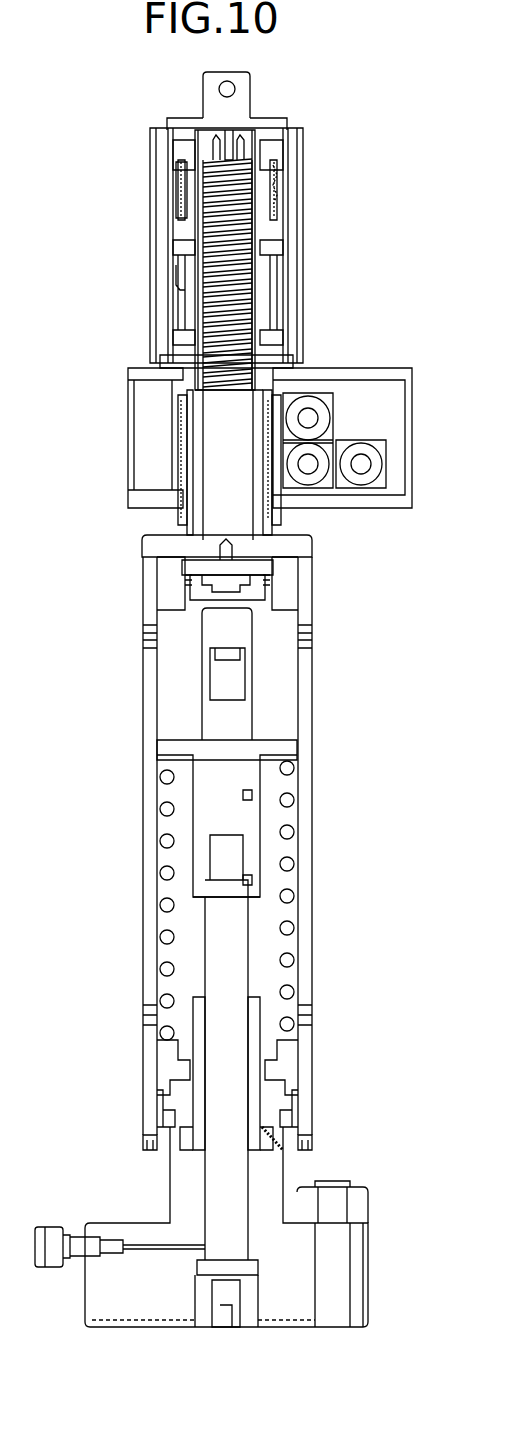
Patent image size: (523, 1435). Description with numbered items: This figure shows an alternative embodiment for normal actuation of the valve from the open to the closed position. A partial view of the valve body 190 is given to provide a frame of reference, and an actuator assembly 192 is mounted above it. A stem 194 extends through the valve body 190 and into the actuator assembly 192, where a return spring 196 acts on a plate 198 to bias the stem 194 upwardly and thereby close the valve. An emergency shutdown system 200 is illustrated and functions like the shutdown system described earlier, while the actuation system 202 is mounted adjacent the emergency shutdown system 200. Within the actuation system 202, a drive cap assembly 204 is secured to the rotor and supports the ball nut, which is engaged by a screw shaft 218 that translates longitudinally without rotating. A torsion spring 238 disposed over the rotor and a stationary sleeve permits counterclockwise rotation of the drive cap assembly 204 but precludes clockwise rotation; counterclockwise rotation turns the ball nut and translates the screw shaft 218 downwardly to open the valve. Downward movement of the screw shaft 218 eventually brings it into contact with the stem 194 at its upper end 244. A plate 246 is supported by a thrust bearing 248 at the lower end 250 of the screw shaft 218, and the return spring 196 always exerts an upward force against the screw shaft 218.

The valve body 190 is at (115, 1222).
The actuator assembly 192 is at (311, 752).
The stem 194 is at (248, 945).
The return spring 196 is at (290, 833).
The plate 198 is at (178, 748).
The emergency shutdown system 200 is at (373, 441).
The actuation system 202 is at (312, 256).
The drive cap assembly 204 is at (252, 106).
The screw shaft 218 is at (225, 462).
The torsion spring 238 is at (183, 176).
The upper end of stem 244 is at (200, 616).
The plate 246 is at (205, 590).
The thrust bearing 248 is at (262, 582).
The lower end of screw shaft 250 is at (190, 568).